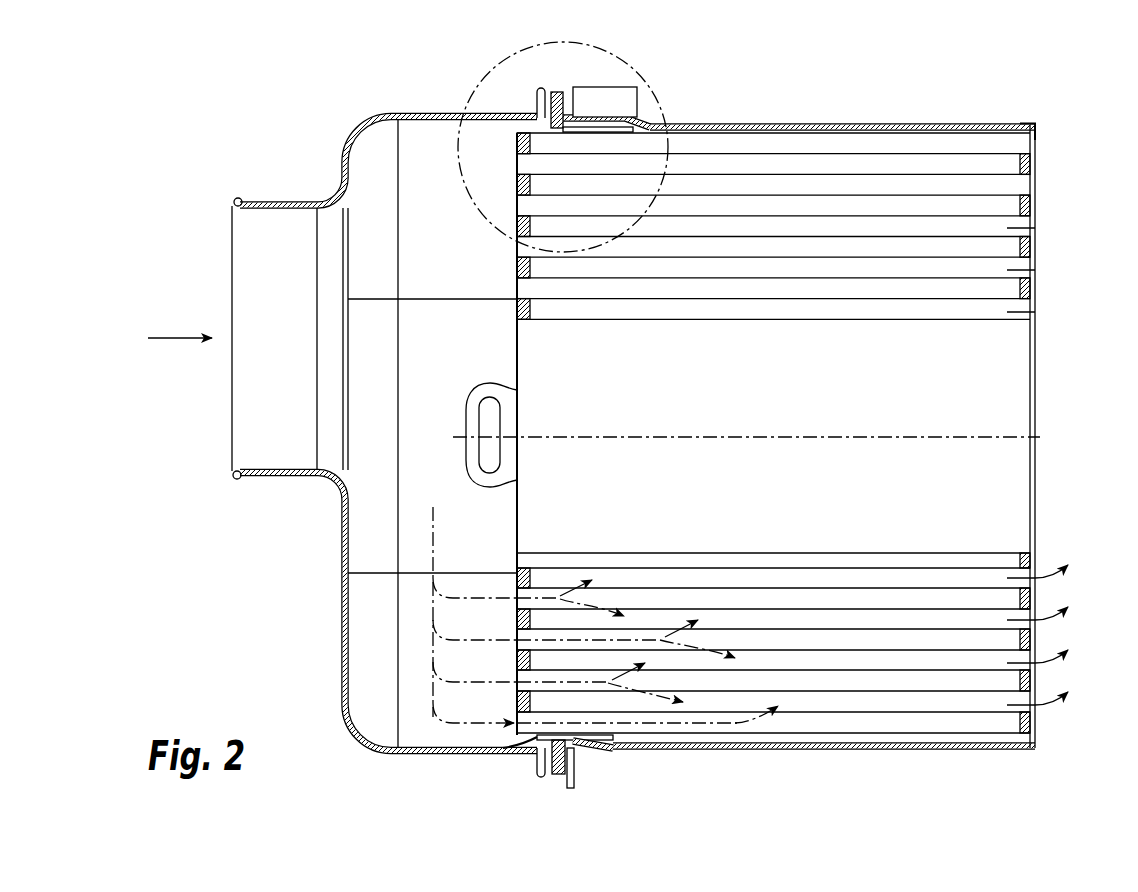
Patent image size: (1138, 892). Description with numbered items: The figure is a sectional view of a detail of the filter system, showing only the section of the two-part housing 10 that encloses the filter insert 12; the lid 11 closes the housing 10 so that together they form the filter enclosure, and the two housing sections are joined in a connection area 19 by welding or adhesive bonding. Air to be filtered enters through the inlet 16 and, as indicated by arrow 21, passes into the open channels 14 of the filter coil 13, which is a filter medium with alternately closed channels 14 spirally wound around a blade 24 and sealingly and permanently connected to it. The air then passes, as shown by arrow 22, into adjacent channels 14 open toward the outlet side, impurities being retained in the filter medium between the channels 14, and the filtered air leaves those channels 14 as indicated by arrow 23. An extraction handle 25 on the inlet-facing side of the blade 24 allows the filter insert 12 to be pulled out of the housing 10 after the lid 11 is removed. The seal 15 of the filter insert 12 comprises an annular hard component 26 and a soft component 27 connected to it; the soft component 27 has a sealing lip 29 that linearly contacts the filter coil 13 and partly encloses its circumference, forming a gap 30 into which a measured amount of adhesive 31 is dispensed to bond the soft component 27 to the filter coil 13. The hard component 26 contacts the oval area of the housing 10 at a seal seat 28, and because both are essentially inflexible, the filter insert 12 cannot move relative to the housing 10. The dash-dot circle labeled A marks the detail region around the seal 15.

The housing 10 is at (772, 122).
The lid 11 is at (372, 116).
The filter insert 12 is at (503, 282).
The filter coil 13 is at (1045, 208).
The channels 14 is at (889, 163).
The seal 15 is at (538, 82).
The inlet 16 is at (247, 255).
The connection area 19 is at (1040, 127).
The arrow 21 is at (435, 542).
The arrow 22 is at (646, 684).
The arrow 23 is at (1068, 242).
The blade 24 is at (1005, 386).
The extraction handle 25 is at (485, 388).
The hard component 26 is at (558, 776).
The soft component 27 is at (543, 780).
The seal seat 28 is at (576, 778).
The sealing lip 29 is at (605, 752).
The gap 30 is at (502, 752).
The adhesive 31 is at (565, 735).
The detail region A is at (648, 70).